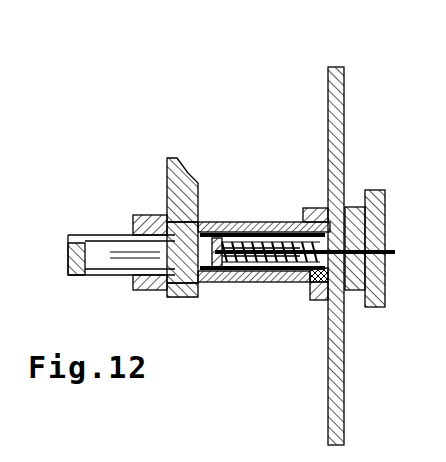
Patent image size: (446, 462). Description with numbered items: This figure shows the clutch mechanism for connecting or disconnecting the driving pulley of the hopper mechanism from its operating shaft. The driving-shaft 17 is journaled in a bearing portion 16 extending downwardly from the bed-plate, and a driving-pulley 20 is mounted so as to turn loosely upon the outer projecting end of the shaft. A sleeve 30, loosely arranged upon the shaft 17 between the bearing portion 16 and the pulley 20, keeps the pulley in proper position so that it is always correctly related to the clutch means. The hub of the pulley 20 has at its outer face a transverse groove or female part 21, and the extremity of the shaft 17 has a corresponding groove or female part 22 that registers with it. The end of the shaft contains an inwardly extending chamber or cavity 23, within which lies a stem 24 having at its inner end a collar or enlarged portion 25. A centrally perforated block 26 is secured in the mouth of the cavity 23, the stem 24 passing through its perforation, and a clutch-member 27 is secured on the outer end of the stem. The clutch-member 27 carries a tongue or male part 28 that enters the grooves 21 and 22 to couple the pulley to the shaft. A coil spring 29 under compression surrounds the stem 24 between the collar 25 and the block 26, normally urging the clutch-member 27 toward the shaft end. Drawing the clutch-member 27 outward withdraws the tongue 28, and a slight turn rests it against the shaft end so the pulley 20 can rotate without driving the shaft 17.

The bearing portion 16 is at (168, 192).
The driving-shaft 17 is at (108, 238).
The driving-pulley 20 is at (340, 152).
The groove or female part 21 is at (308, 212).
The groove or female part 22 is at (243, 226).
The chamber or cavity 23 is at (250, 285).
The stem 24 is at (268, 285).
The collar or enlarged portion 25 is at (212, 288).
The centrally perforated block 26 is at (317, 283).
The clutch-member 27 is at (378, 220).
The tongue or male part 28 is at (328, 300).
The coil spring 29 is at (238, 226).
The sleeve 30 is at (212, 222).